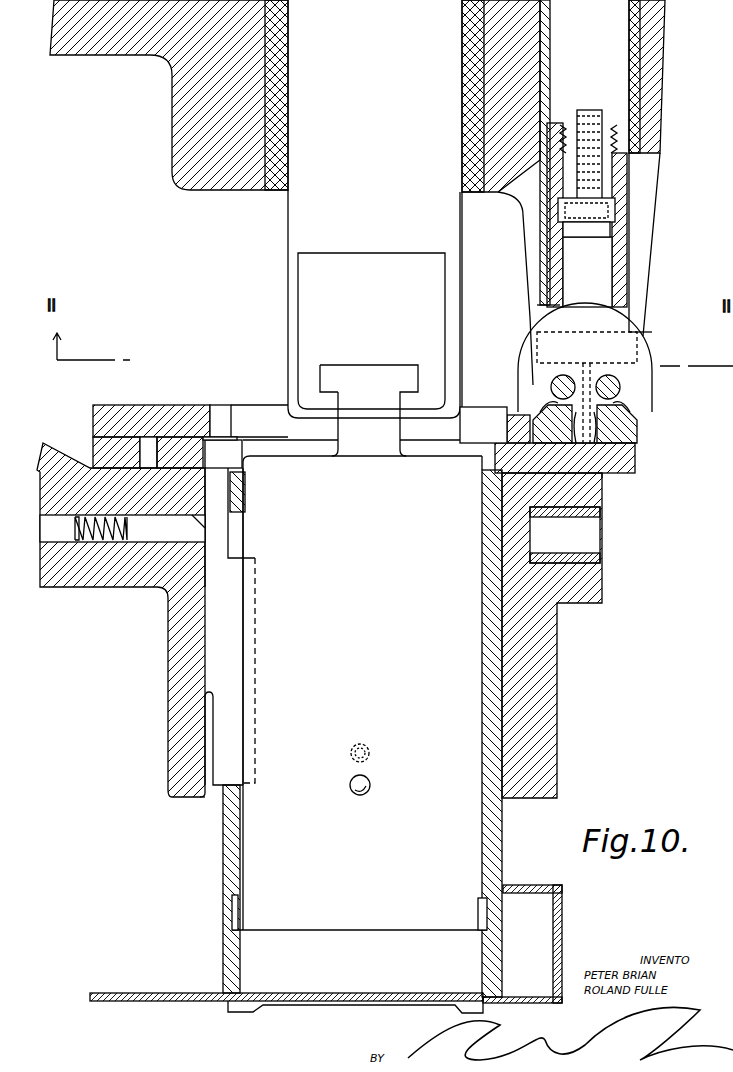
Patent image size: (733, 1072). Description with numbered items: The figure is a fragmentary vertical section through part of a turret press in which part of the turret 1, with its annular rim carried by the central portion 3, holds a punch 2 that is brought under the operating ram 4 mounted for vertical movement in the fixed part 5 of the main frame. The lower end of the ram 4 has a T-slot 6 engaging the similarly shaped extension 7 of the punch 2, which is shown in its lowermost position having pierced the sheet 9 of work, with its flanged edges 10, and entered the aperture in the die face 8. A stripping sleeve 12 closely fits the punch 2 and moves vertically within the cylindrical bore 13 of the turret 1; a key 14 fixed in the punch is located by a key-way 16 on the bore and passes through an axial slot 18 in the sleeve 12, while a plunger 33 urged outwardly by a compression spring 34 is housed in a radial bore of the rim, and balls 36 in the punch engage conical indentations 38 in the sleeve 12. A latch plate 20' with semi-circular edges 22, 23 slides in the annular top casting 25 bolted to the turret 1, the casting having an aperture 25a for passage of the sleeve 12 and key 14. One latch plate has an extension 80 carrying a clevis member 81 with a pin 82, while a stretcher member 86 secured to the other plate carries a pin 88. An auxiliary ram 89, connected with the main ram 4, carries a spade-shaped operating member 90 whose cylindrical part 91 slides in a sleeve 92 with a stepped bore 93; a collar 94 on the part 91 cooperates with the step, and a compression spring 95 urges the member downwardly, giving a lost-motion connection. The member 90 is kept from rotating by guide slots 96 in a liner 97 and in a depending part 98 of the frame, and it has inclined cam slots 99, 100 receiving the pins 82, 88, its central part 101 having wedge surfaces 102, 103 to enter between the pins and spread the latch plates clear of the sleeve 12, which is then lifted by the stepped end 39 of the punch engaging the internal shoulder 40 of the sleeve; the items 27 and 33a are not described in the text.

The turret 1 is at (550, 710).
The punch 2 is at (245, 1010).
The central portion of the turret 3 is at (56, 462).
The operating ram 4 is at (290, 227).
The fixed part of the main frame 5 is at (658, 18).
The T-slot 6 is at (320, 380).
The extension of the punch 7 is at (353, 374).
The die face 8 is at (520, 1003).
The sheet 9 is at (152, 993).
The flanged edges 10 is at (562, 946).
The sleeve 12 is at (490, 824).
The cylindrical bore 13 is at (221, 809).
The key 14 is at (215, 742).
The key-way 16 is at (205, 795).
The axial slot 18 is at (236, 553).
The latch plate 20' is at (180, 423).
The semi-circular opposing edge 22 is at (250, 440).
The semi-circular opposing edge 23 is at (460, 445).
The annular top casting 25 is at (149, 412).
The aperture 25a is at (480, 436).
The plate 27 is at (112, 450).
The plunger 33 is at (131, 542).
The spring channel 33a is at (172, 550).
The compression spring 34 is at (88, 542).
The balls 36 is at (372, 787).
The conical indentations 38 is at (371, 750).
The step 39 is at (482, 931).
The internal shoulder 40 is at (482, 898).
The extension 80 is at (637, 473).
The clevis member 81 is at (622, 426).
The pin 82 is at (620, 388).
The stretcher member 86 is at (496, 484).
The pin 88 is at (552, 380).
The auxiliary ram 89 is at (622, 52).
The operating member 90 is at (618, 344).
The cylindrical part 91 is at (572, 278).
The sleeve 92 is at (618, 282).
The step 93 is at (612, 233).
The collar 94 is at (612, 206).
The compression spring 95 is at (598, 168).
The guide slots 96 is at (530, 252).
The liner 97 is at (633, 98).
The depending part of the frame 98 is at (648, 300).
The cam slot 99 is at (614, 401).
The cam slot 100 is at (548, 396).
The central part 101 is at (626, 448).
The wedge surface 102 is at (606, 474).
The wedge surface 103 is at (560, 475).